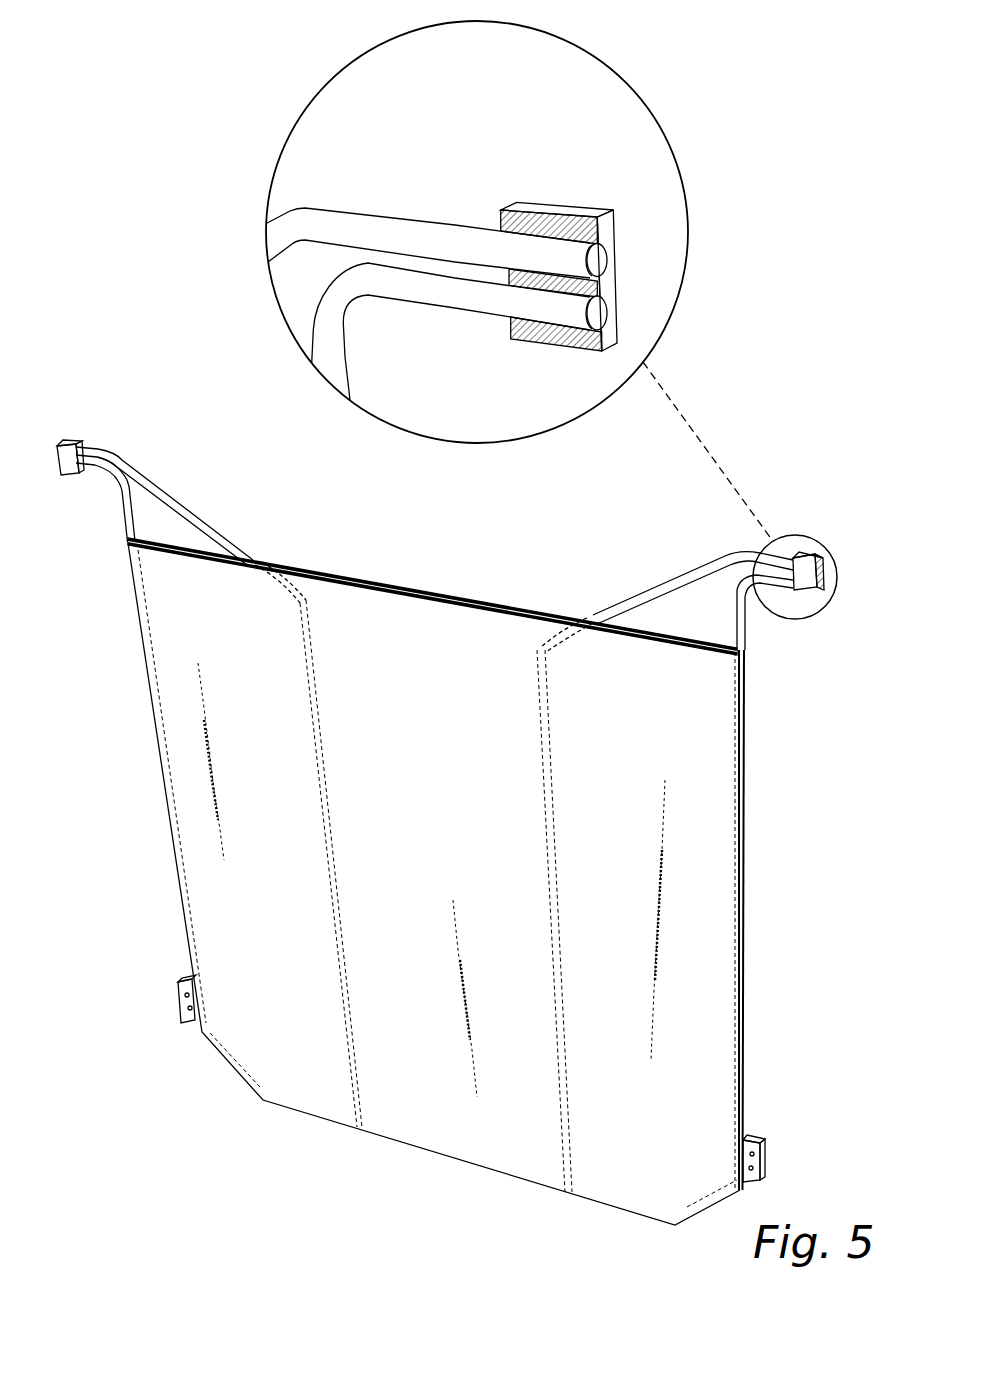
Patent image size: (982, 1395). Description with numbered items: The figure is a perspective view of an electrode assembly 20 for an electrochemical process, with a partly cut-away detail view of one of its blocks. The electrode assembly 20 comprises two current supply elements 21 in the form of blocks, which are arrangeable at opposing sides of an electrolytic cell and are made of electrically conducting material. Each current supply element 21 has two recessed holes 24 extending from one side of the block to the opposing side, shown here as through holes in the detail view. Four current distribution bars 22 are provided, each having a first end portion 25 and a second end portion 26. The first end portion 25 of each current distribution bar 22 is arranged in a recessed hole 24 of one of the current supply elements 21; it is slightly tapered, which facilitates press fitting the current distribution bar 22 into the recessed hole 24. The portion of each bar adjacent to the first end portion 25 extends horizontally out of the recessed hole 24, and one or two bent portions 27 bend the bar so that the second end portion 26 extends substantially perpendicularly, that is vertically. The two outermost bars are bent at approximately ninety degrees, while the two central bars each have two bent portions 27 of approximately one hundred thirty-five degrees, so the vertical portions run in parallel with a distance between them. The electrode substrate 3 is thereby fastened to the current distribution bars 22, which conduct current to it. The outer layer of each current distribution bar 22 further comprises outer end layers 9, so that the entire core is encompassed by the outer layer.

The electrode substrate 3 is at (172, 635).
The outer end layers 9 is at (603, 318).
The electrode assembly 20 is at (230, 366).
The current supply element 21 is at (563, 205).
The current distribution bar 22 is at (128, 512).
The recessed hole 24 is at (608, 236).
The first end portion 25 is at (548, 252).
The second end portion 26 is at (345, 1044).
The bent portion 27 is at (128, 458).